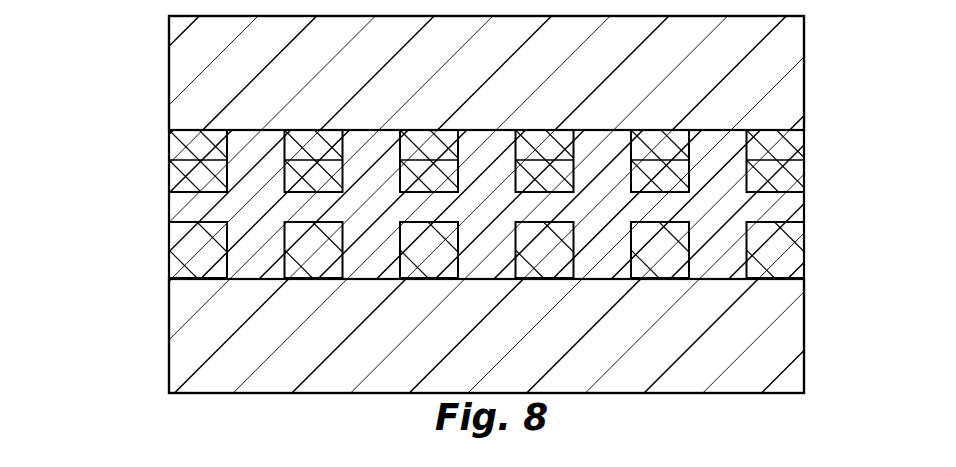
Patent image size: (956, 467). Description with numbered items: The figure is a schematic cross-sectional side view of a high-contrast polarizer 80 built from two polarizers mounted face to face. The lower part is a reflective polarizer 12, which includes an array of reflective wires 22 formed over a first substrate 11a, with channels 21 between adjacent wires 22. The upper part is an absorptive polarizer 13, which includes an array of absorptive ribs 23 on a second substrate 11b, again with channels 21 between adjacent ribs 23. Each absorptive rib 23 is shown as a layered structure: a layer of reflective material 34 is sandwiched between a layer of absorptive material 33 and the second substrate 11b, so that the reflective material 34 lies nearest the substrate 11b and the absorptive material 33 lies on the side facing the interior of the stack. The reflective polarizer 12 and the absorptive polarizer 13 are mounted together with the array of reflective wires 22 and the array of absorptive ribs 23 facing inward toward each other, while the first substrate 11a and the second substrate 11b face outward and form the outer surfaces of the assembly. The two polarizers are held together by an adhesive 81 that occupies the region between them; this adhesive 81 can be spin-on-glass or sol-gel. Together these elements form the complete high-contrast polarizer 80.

The first substrate 11a is at (486, 336).
The second substrate 11b is at (866, 72).
The reflective polarizer 12 is at (525, 307).
The absorptive polarizer 13 is at (478, 233).
The channels 21 is at (732, 261).
The reflective wires 22 is at (789, 262).
The absorptive ribs 23 is at (429, 165).
The layer of absorptive material 33 is at (140, 180).
The layer of reflective material 34 is at (140, 143).
The high-contrast polarizer 80 is at (104, 320).
The adhesive 81 is at (471, 218).